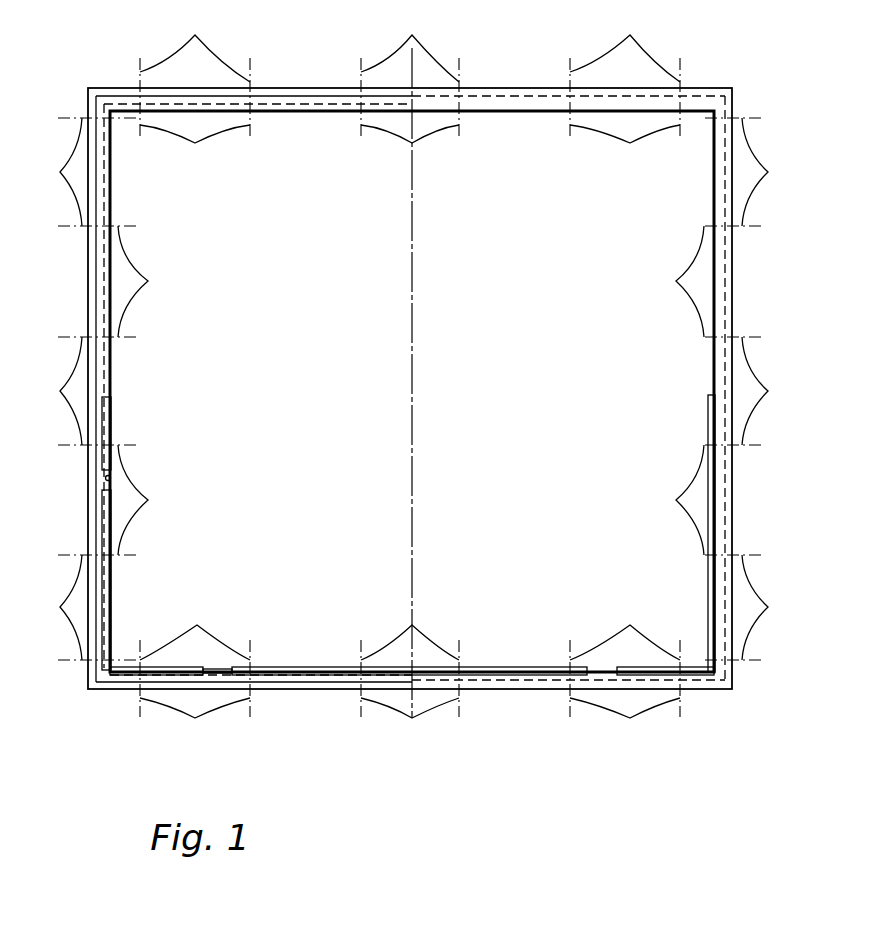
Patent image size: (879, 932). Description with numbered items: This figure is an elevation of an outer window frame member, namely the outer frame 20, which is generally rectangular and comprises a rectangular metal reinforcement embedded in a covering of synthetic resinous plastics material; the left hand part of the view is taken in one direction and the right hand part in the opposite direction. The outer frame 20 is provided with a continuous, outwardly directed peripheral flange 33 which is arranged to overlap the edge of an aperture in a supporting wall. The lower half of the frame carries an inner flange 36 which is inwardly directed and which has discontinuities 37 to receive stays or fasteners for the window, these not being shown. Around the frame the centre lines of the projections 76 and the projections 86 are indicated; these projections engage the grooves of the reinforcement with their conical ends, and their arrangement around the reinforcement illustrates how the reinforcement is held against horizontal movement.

The outer frame 20 is at (734, 291).
The peripheral flange 33 is at (300, 88).
The inner flange 36 is at (110, 600).
The discontinuities 37 is at (108, 478).
The projections 76 is at (411, 392).
The projections 86 is at (412, 379).